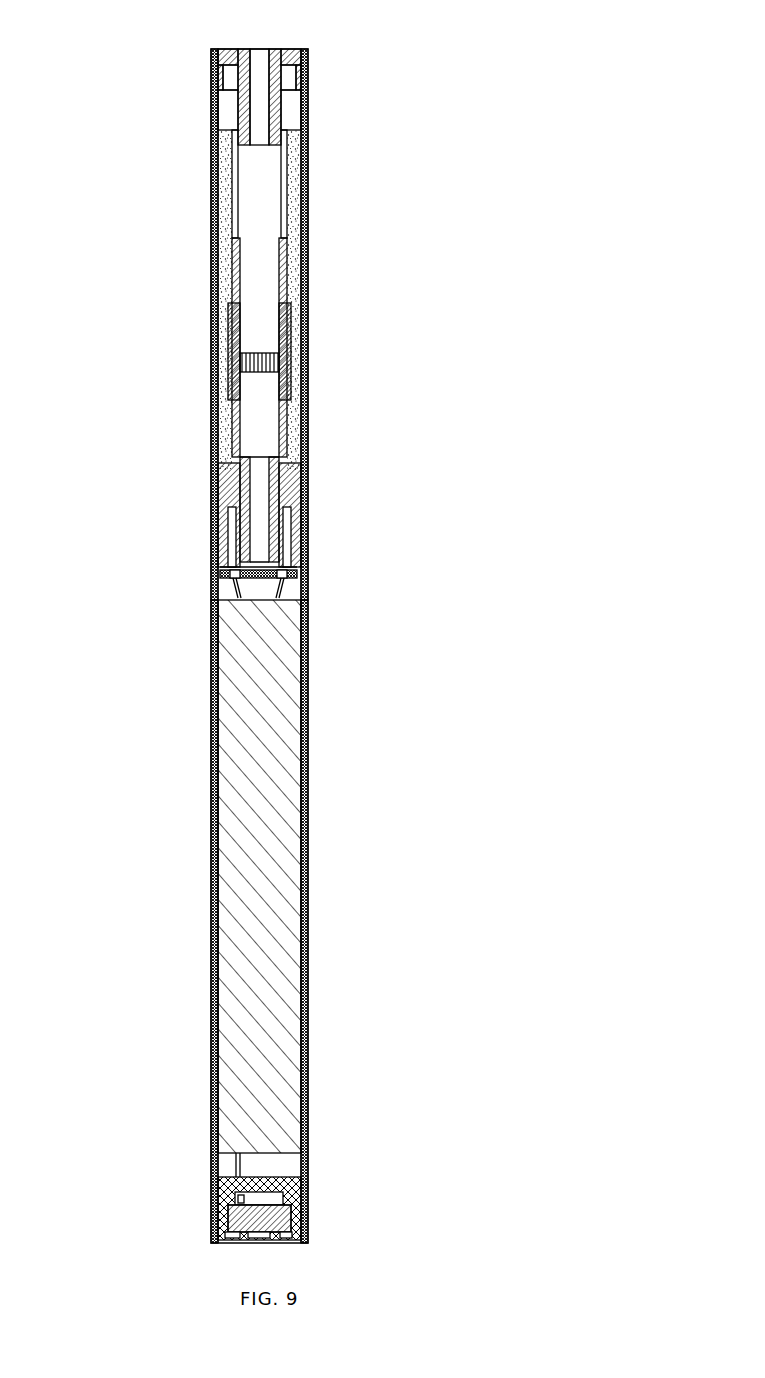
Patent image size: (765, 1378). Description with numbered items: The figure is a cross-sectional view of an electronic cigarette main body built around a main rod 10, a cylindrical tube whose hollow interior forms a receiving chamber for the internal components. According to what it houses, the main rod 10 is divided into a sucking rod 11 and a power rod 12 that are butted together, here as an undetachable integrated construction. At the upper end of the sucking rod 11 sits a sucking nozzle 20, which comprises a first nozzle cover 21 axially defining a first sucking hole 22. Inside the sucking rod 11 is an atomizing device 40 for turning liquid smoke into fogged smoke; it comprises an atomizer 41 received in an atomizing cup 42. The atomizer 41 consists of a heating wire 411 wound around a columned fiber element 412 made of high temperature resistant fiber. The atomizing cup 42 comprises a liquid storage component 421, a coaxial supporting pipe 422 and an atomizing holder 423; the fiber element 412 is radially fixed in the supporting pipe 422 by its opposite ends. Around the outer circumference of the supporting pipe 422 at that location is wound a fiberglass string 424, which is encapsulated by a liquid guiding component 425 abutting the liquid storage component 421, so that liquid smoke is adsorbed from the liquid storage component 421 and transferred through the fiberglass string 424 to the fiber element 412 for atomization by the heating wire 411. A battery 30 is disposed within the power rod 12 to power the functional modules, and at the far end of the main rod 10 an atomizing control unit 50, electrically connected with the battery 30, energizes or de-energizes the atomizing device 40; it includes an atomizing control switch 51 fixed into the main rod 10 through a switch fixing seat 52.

The main rod 10 is at (108, 432).
The sucking rod 11 is at (211, 395).
The power rod 12 is at (211, 828).
The sucking nozzle 20 is at (236, 48).
The first nozzle cover 21 is at (285, 62).
The first sucking hole 22 is at (260, 117).
The battery 30 is at (290, 997).
The atomizing device 40 is at (462, 350).
The atomizer 41 is at (407, 315).
The heating wire 411 is at (262, 355).
The fiber element 412 is at (294, 371).
The atomizing cup 42 is at (407, 448).
The liquid storage component 421 is at (290, 460).
The supporting pipe 422 is at (295, 497).
The atomizing holder 423 is at (297, 545).
The fiberglass string 424 is at (282, 304).
The liquid guiding component 425 is at (290, 248).
The atomizing control unit 50 is at (410, 1165).
The atomizing control switch 51 is at (277, 1217).
The switch fixing seat 52 is at (287, 1193).